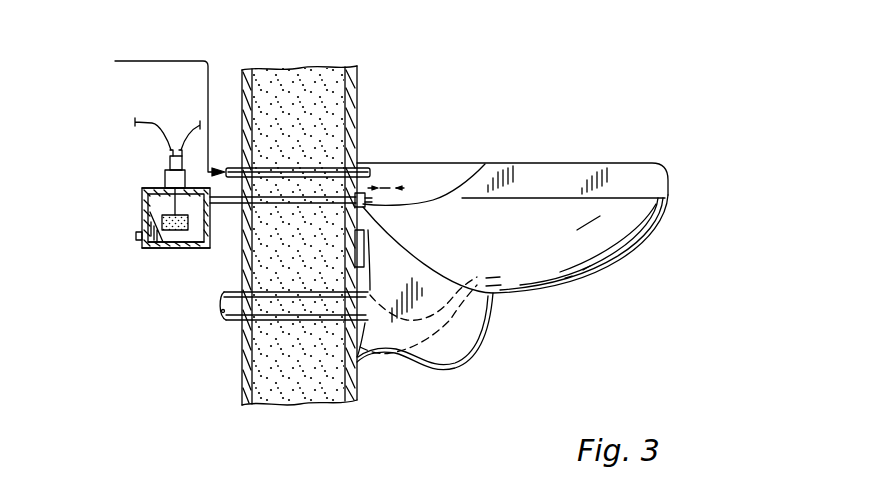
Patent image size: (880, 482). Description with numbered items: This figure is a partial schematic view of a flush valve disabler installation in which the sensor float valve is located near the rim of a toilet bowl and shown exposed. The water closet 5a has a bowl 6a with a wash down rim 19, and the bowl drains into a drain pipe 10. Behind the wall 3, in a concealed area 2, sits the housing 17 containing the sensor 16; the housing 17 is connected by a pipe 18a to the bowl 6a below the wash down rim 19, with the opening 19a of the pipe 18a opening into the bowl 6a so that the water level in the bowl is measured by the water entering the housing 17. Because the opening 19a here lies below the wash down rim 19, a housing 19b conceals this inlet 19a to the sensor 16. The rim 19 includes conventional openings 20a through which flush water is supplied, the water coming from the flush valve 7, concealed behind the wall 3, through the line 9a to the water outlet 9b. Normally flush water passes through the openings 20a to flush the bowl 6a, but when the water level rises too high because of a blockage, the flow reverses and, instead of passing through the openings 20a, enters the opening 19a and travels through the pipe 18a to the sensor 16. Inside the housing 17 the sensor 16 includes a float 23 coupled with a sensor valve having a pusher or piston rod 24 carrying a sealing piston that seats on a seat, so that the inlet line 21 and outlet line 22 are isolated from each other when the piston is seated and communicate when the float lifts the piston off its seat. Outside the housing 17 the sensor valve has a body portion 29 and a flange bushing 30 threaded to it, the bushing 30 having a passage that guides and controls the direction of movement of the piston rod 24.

The concealed area 2 is at (128, 366).
The wall 3 is at (240, 397).
The water closet 5a is at (653, 157).
The bowl 6a is at (663, 200).
The flush valve 7 is at (137, 97).
The line 9a is at (273, 168).
The water outlet 9b is at (377, 182).
The drain pipe 10 is at (233, 323).
The sensor 16 is at (175, 254).
The housing 17 is at (140, 210).
The pipe 18a is at (362, 232).
The wash down rim 19 is at (552, 177).
The opening 19a is at (365, 203).
The housing 19b is at (372, 228).
The conventional openings 20a is at (382, 187).
The inlet line 21 is at (148, 120).
The outlet line 22 is at (197, 124).
The float 23 is at (177, 250).
The pusher or piston rod 24 is at (180, 202).
The body portion 29 is at (165, 178).
The flange bushing 30 is at (143, 188).